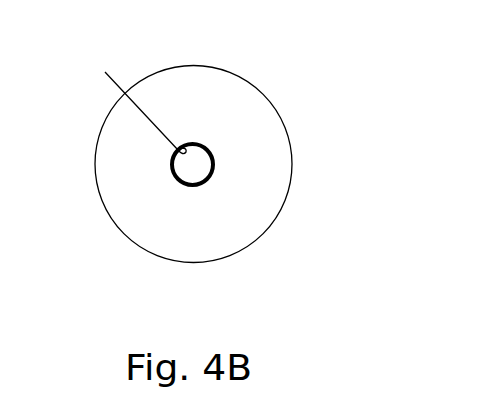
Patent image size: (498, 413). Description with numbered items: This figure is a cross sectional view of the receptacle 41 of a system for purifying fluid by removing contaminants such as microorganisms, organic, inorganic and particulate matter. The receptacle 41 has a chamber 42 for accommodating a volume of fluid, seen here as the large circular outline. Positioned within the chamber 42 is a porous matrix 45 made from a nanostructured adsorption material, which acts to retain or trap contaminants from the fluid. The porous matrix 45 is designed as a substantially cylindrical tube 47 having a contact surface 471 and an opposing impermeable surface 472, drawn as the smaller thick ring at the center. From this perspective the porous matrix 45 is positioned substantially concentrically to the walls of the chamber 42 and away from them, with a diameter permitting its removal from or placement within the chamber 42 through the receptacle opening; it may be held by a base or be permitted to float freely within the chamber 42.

The receptacle 41 is at (232, 76).
The chamber 42 is at (204, 103).
The porous matrix 45 is at (215, 160).
The cylindrical tube 47 is at (173, 175).
The contact surface 471 is at (211, 182).
The impermeable surface 472 is at (129, 106).